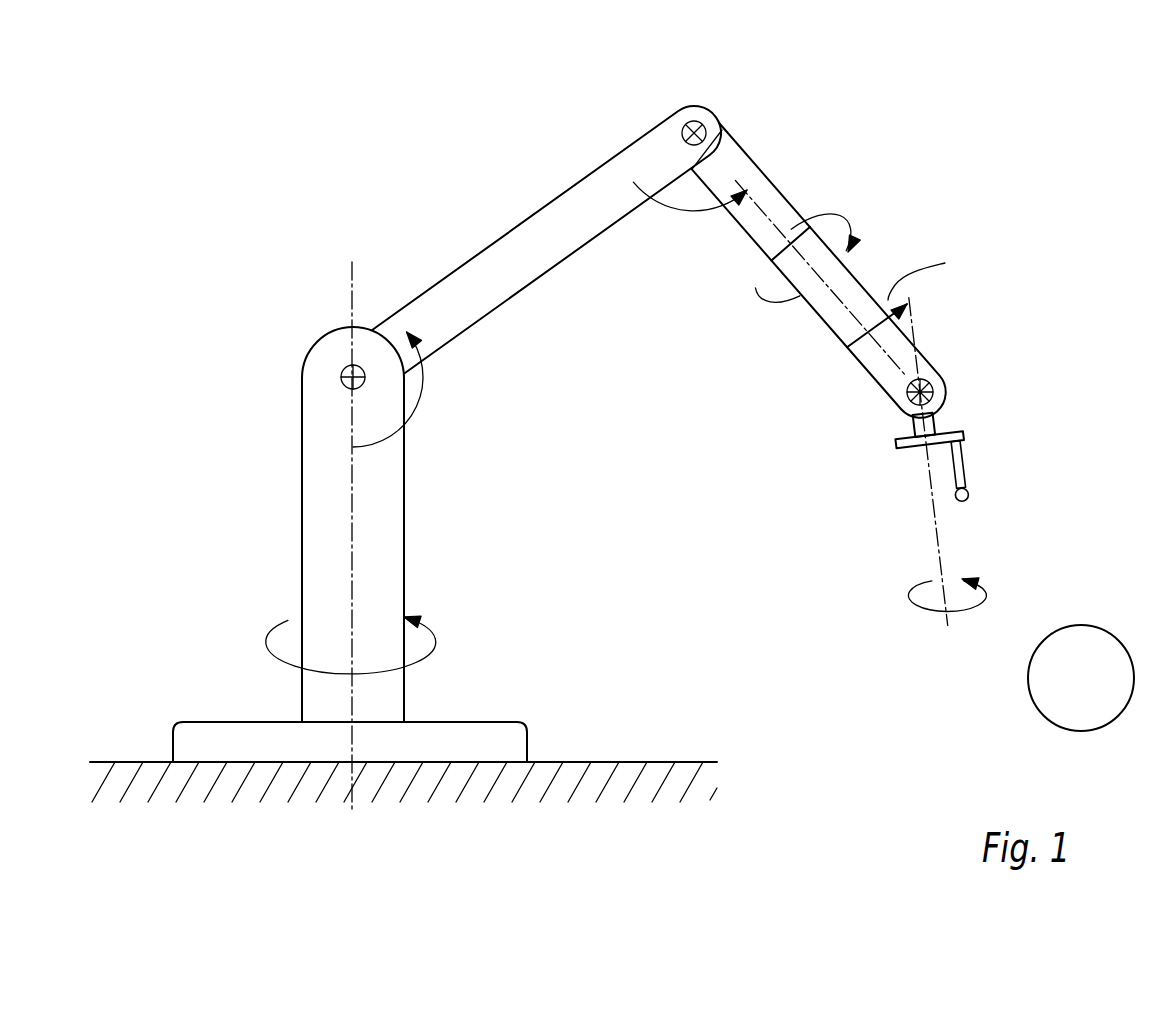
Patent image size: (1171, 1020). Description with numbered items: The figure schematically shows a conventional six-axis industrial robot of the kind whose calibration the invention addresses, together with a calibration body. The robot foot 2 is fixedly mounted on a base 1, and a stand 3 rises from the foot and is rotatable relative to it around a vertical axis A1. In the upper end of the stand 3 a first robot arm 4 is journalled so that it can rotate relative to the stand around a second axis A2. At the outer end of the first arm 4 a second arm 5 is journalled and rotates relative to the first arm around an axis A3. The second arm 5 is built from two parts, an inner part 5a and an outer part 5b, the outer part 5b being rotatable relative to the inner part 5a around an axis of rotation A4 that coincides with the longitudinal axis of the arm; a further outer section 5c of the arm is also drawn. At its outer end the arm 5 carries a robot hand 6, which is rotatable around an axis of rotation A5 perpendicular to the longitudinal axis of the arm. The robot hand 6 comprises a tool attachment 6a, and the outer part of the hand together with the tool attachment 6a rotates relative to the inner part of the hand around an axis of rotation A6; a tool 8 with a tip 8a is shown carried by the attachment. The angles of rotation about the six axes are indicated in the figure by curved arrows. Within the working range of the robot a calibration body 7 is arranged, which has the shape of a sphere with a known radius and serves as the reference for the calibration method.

The base 1 is at (663, 770).
The robot foot 2 is at (187, 740).
The stand 3 is at (388, 580).
The first robot arm 4 is at (522, 242).
The second arm 5 is at (831, 253).
The inner part 5a is at (762, 250).
The outer part 5b is at (862, 357).
The forearm end section 5c is at (855, 270).
The robot hand 6 is at (943, 412).
The tool attachment 6a is at (896, 446).
The calibration body 7 is at (1087, 638).
The tool / gripper finger 8 is at (970, 465).
The tool tip 8a is at (968, 499).
The vertical axis A1 is at (353, 292).
The second axis A2 is at (348, 382).
The axis A3 is at (692, 120).
The axis of rotation A4 is at (763, 172).
The axis of rotation A5 is at (935, 385).
The axis of rotation A6 is at (938, 535).